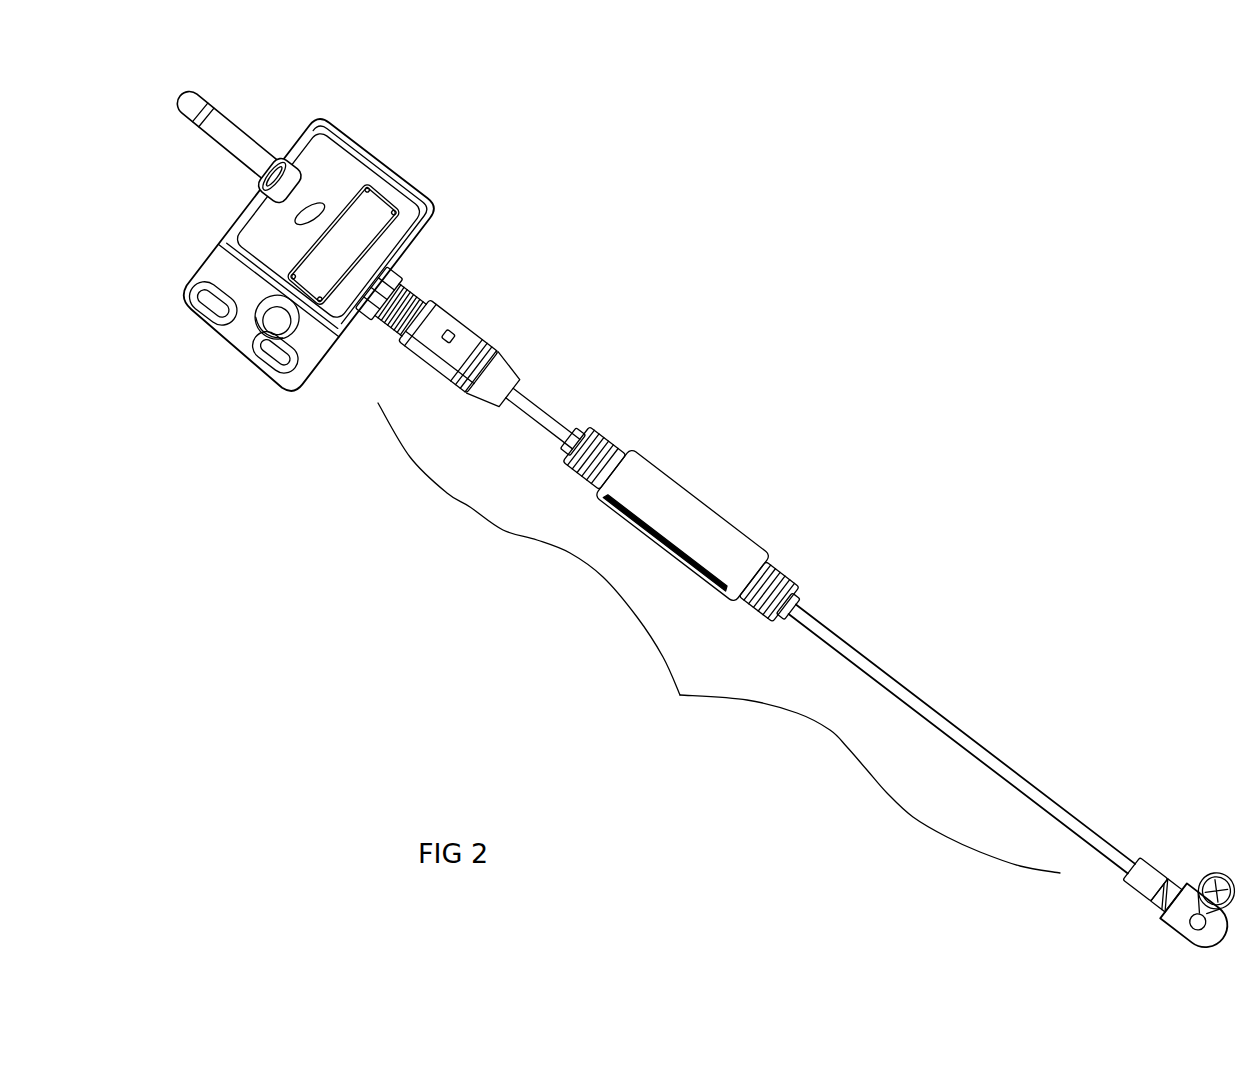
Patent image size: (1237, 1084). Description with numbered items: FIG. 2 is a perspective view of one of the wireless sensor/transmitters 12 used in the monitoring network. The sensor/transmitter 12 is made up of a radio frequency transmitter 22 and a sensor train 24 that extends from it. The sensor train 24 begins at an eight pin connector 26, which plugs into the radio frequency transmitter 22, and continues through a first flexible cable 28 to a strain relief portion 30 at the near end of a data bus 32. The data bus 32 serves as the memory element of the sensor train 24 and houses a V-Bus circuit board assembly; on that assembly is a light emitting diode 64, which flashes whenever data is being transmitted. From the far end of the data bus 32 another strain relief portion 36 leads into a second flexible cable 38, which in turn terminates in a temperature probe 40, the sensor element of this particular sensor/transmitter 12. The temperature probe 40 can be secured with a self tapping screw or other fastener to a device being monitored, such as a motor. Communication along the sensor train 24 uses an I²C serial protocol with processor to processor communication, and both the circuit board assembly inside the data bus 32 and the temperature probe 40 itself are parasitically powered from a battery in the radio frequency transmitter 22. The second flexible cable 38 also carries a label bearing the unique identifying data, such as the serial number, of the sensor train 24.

The sensor/transmitter 12 is at (930, 290).
The radio frequency transmitter 22 is at (455, 112).
The sensor train 24 is at (719, 638).
The 8 pin connector 26 is at (463, 330).
The first flexible cable 28 is at (542, 407).
The strain relief portion 30 is at (590, 432).
The data bus 32 is at (743, 528).
The strain relief portion 36 is at (780, 573).
The second flexible cable 38 is at (970, 740).
The temperature probe 40 is at (1155, 868).
The light emitting diode 64 is at (680, 525).